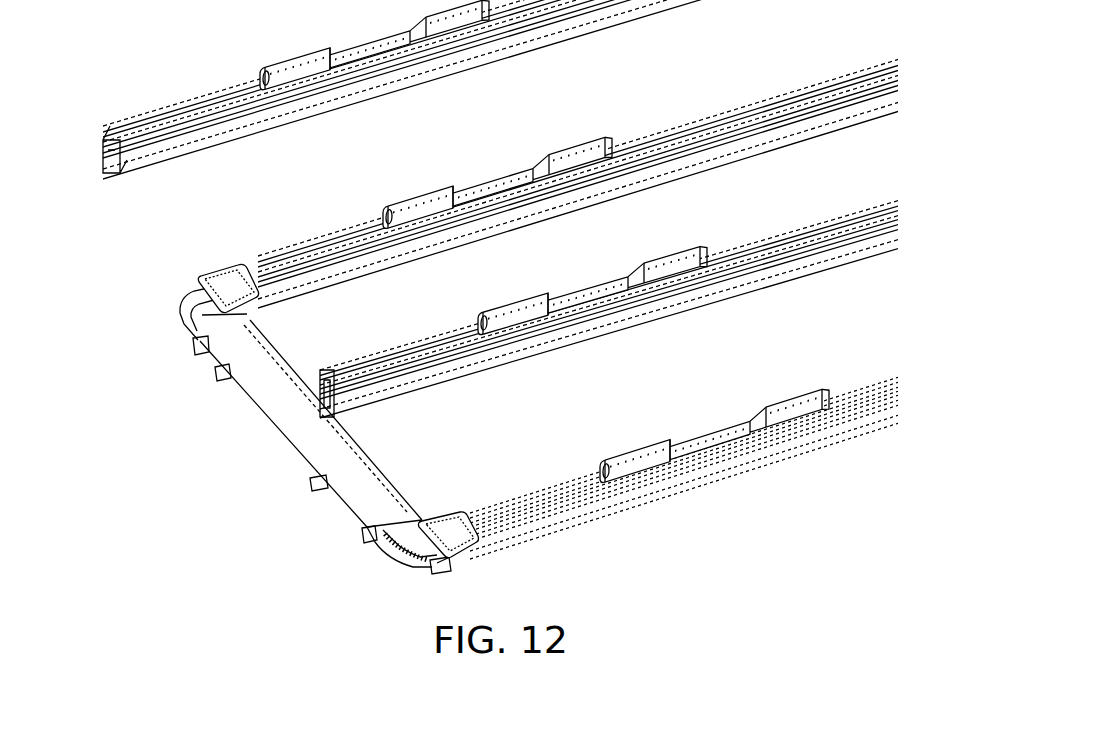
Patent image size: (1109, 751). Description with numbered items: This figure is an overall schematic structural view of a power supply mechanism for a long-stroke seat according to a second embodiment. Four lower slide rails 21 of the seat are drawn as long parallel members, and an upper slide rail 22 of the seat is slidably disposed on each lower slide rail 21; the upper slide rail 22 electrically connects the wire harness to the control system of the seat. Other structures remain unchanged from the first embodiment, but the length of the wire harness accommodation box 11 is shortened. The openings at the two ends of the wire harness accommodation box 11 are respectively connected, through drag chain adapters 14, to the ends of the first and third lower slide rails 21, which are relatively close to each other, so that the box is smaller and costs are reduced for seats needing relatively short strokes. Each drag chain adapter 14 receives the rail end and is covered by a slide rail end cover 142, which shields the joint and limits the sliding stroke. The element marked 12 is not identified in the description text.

The wire harness accommodation box 11 is at (300, 428).
The frame cross beam 12 is at (314, 240).
The drag chain adapter 14 is at (398, 535).
The slide rail end cover 142 is at (445, 528).
The lower slide rail of the seat 21 is at (752, 104).
The upper slide rail of the seat 22 is at (787, 402).